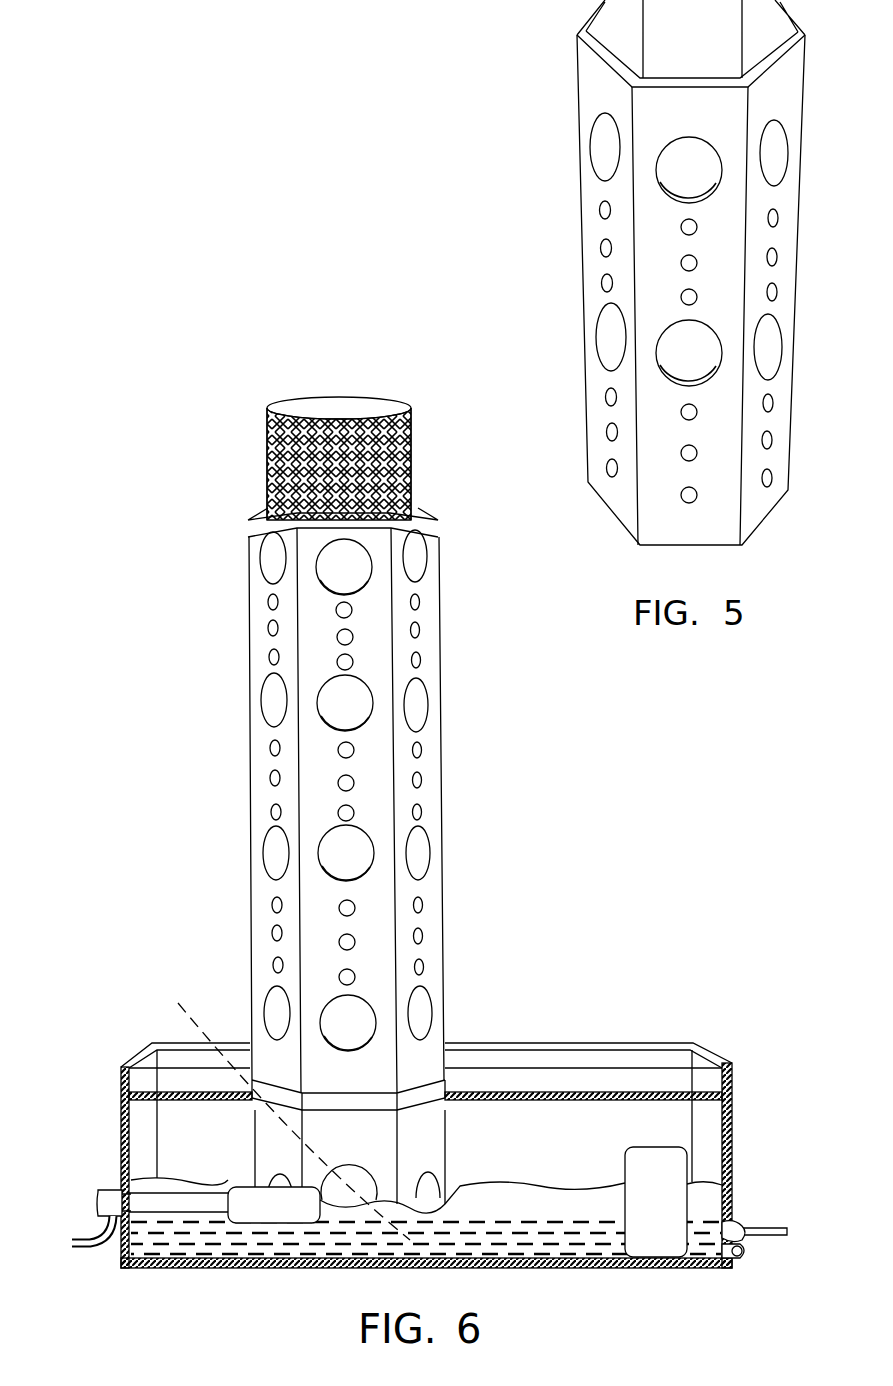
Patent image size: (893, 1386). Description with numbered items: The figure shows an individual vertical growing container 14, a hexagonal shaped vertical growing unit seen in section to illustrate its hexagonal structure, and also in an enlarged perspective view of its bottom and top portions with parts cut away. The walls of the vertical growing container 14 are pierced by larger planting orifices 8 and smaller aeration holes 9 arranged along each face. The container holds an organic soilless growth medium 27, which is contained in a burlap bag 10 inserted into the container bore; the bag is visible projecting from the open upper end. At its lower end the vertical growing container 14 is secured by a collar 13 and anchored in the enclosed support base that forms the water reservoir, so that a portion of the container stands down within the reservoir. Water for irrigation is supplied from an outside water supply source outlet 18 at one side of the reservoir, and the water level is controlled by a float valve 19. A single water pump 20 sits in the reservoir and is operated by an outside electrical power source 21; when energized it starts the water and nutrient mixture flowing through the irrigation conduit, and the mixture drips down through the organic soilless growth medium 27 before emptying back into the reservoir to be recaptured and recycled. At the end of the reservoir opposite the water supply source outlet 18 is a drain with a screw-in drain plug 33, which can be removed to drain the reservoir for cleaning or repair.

The planting orifices 8 is at (338, 700).
The aeration holes 9 is at (345, 910).
The burlap bag 10 is at (417, 466).
The collars 13 is at (280, 1097).
The vertical growing container 14 is at (382, 648).
The water supply source outlet 18 is at (108, 1197).
The float valve 19 is at (253, 1197).
The water pump 20 is at (658, 1167).
The outside electrical power source 21 is at (731, 1230).
The organic soilless growth medium 27 is at (342, 398).
The drain plug 33 is at (745, 1256).